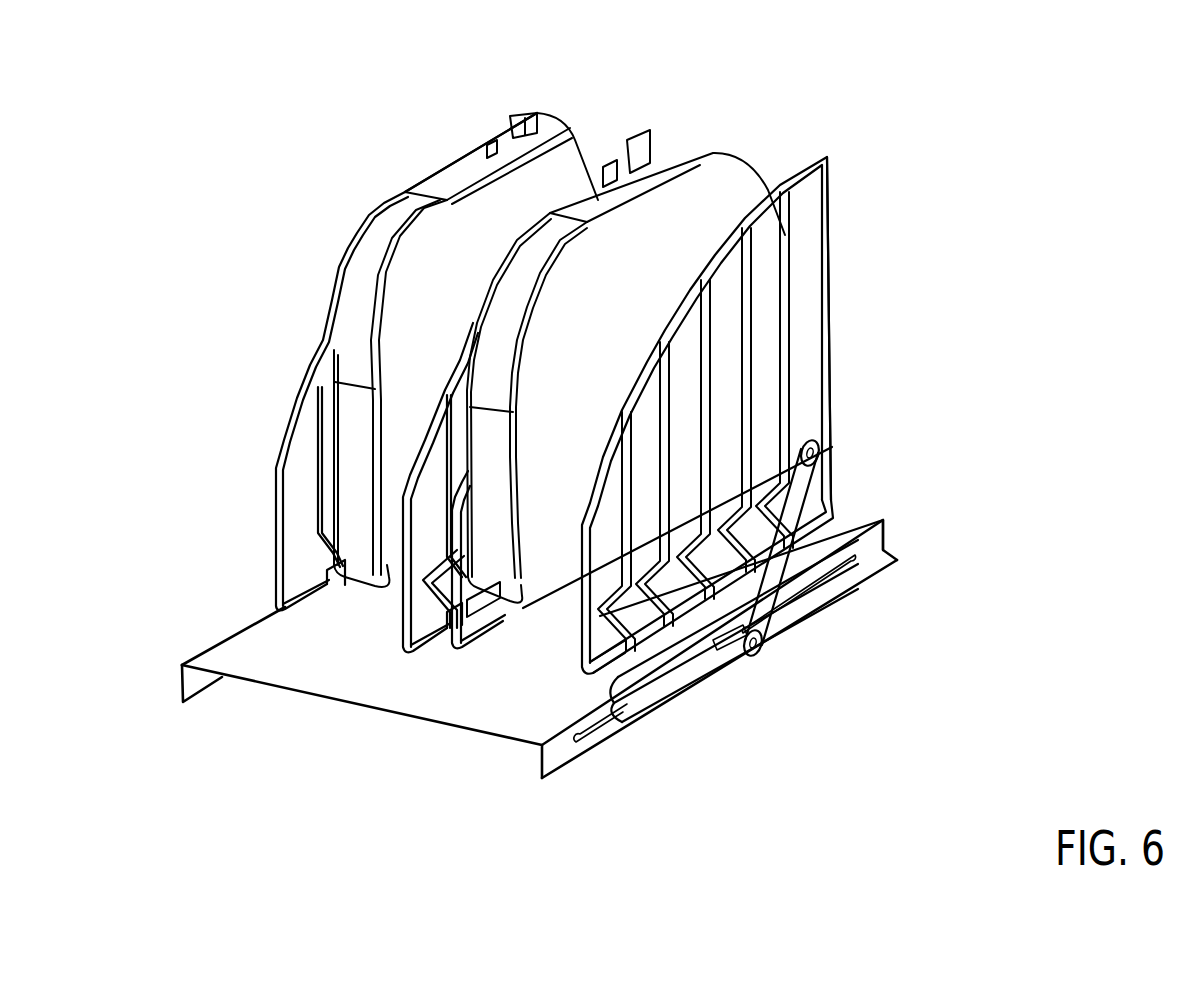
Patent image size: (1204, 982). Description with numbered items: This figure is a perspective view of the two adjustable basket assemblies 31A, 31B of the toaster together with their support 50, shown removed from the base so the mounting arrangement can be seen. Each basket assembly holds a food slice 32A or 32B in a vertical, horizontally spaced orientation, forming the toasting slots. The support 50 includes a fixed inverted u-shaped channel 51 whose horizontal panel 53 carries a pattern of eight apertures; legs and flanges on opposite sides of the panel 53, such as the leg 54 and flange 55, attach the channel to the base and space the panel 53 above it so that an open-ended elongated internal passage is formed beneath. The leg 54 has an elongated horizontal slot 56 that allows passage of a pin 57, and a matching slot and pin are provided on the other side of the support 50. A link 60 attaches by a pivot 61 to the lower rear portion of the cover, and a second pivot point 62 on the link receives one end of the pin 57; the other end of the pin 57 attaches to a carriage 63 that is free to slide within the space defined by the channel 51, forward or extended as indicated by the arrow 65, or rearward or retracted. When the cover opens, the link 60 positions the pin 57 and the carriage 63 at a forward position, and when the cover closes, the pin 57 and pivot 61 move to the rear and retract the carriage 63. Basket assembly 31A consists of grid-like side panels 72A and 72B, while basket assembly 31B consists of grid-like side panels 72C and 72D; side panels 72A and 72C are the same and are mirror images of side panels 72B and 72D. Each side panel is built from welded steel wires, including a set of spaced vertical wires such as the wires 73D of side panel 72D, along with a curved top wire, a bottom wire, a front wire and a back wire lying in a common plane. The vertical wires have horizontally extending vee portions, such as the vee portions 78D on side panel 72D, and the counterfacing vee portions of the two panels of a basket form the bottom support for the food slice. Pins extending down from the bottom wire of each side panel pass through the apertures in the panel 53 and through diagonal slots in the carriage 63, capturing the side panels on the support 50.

The basket assembly 31A is at (578, 93).
The basket assembly 31B is at (834, 184).
The food slice 32A is at (545, 140).
The food slice 32B is at (683, 165).
The support 50 is at (905, 529).
The fixed inverted u-shaped channel 51 is at (220, 728).
The horizontal panel 53 is at (345, 683).
The leg 54 is at (877, 540).
The flange 55 is at (883, 568).
The elongated horizontal slot 56 is at (660, 688).
The pin 57 is at (735, 645).
The link 60 is at (808, 495).
The pivot 61 is at (820, 452).
The second pivot point 62 is at (768, 650).
The carriage 63 is at (622, 712).
The arrow 65 is at (845, 723).
The grid-like side panel 72A is at (274, 550).
The grid-like side panel 72B is at (447, 652).
The grid-like side panel 72C is at (490, 648).
The grid-like side panel 72D is at (830, 322).
The spaced vertical steel wires 73D is at (790, 288).
The vee portions 78D is at (580, 650).